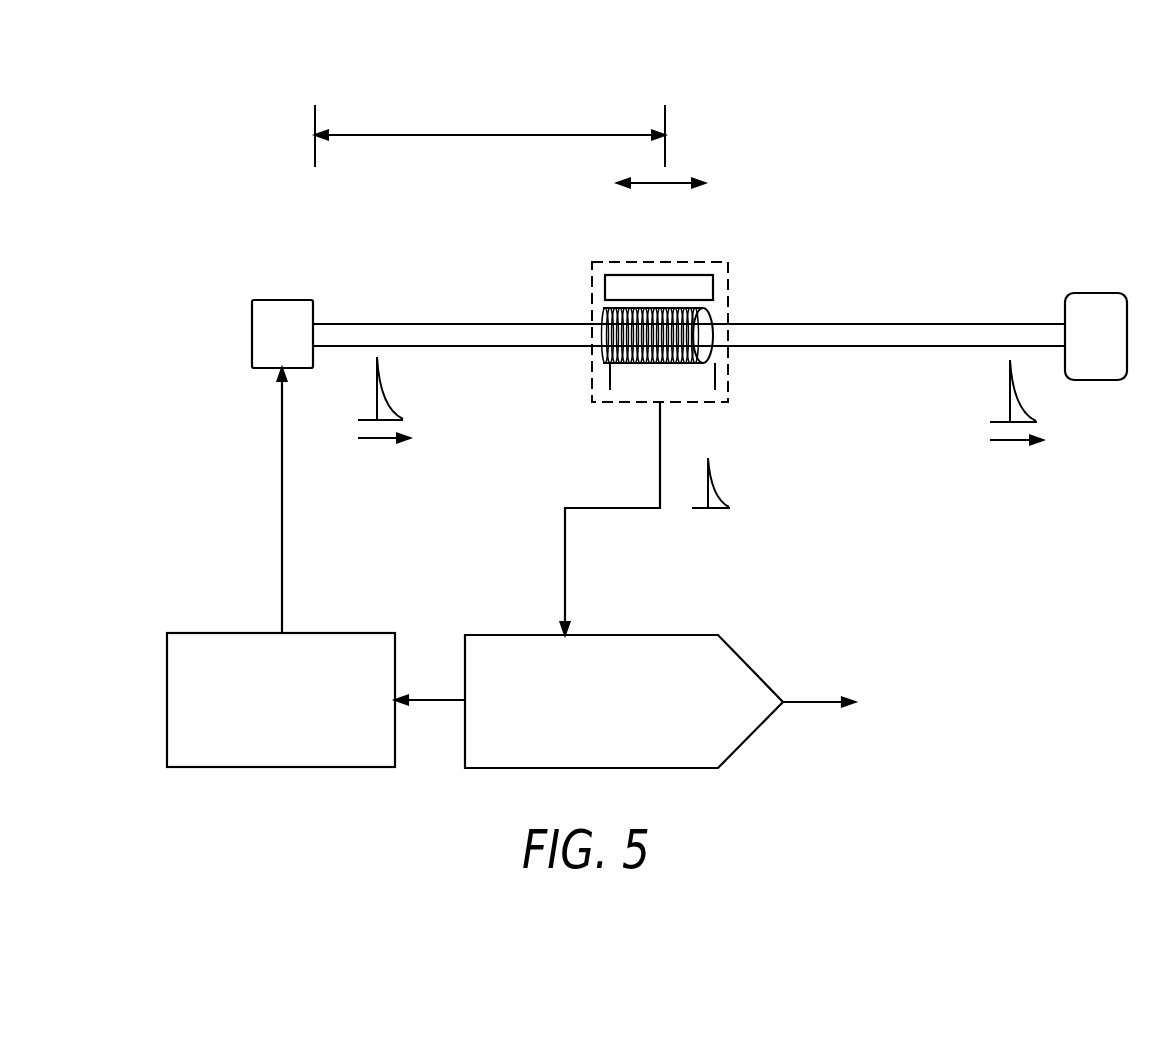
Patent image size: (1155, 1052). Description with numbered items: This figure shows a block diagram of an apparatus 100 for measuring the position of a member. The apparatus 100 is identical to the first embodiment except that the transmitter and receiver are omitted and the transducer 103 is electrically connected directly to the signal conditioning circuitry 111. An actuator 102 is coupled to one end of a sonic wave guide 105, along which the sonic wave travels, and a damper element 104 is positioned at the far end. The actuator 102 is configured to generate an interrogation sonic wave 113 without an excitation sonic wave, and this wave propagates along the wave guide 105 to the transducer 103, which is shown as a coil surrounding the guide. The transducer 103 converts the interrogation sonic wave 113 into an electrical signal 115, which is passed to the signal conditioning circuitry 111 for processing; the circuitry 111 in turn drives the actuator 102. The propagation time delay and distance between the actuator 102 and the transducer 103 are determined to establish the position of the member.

The apparatus 100 is at (1022, 122).
The actuator 102 is at (277, 300).
The transducer 103 is at (725, 250).
The end termination / damper 104 is at (1090, 293).
The waveguide rod 105 is at (893, 323).
The signal conditioning circuitry 111 is at (507, 633).
The interrogation sonic wave 113 is at (380, 387).
The electrical signal 115 is at (712, 488).